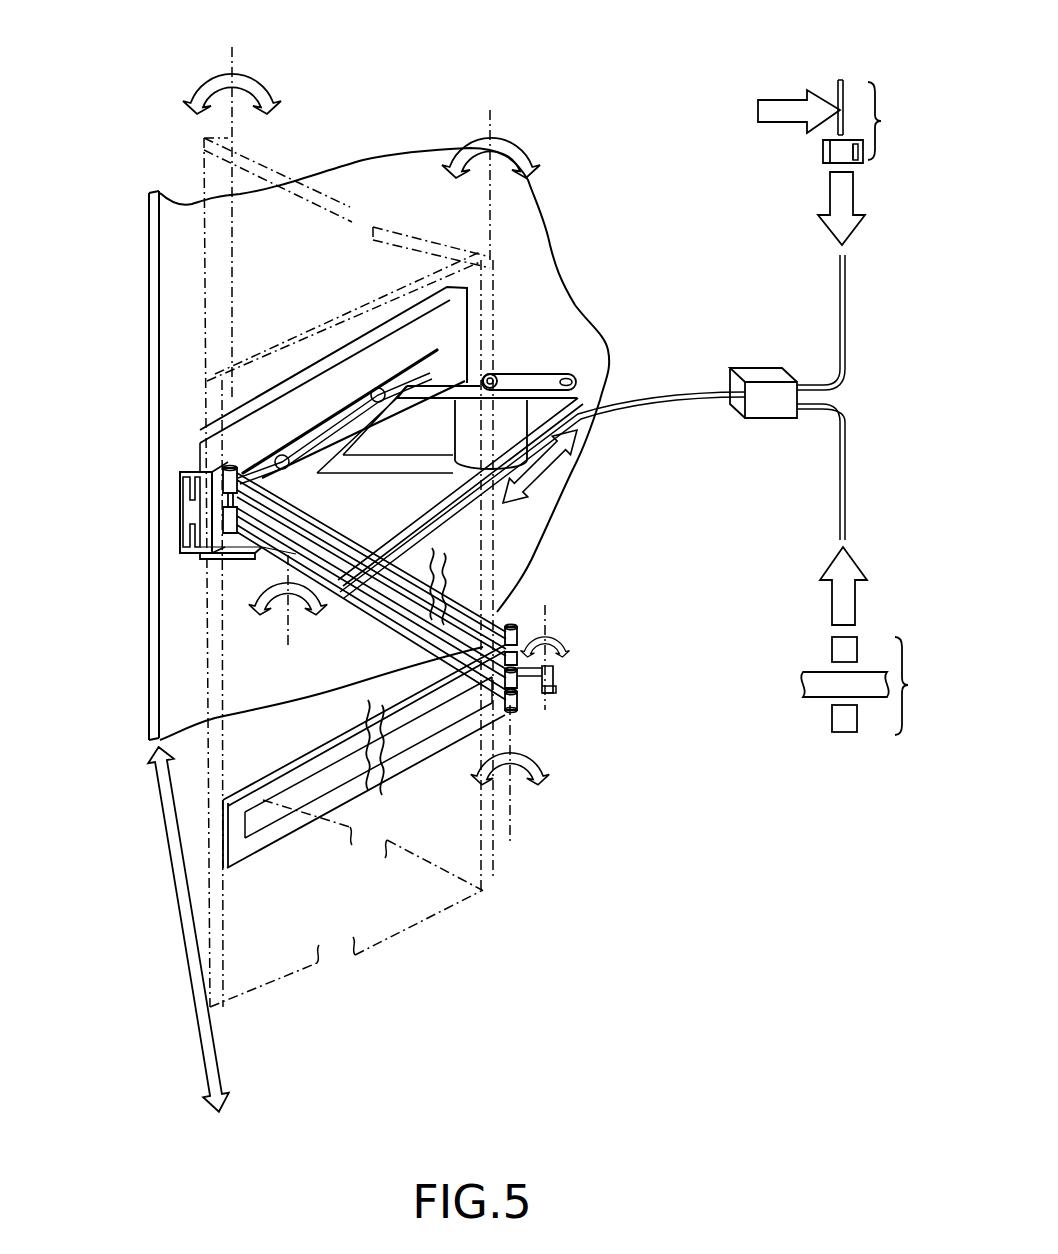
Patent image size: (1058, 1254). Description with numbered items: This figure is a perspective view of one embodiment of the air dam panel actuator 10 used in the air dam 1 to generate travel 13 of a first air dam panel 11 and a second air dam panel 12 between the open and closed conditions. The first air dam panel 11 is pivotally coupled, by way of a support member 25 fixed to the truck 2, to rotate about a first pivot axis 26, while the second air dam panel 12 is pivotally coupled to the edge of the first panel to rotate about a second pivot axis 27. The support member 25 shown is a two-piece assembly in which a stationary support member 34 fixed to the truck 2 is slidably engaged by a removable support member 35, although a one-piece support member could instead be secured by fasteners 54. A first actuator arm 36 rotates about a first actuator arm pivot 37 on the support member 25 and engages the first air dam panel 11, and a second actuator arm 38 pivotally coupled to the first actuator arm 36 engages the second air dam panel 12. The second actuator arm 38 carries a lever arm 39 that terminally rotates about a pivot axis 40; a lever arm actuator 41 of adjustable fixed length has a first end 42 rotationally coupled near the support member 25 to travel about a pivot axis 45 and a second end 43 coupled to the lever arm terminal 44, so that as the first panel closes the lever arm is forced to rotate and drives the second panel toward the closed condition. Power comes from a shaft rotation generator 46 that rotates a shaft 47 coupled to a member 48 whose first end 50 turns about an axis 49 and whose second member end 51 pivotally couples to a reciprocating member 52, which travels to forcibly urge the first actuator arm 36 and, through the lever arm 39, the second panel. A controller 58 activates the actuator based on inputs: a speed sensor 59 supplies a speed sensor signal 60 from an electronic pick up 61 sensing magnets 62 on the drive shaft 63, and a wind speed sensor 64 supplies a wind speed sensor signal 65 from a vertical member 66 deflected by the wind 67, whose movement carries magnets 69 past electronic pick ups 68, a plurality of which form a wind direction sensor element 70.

The air dam 1 is at (674, 307).
The truck 2 is at (187, 268).
The air dam panel actuator 10 is at (620, 458).
The first air dam panel 11 is at (300, 208).
The second air dam panel 12 is at (448, 908).
The travel 13 is at (190, 932).
The support member 25 is at (170, 518).
The first pivot axis 26 is at (232, 208).
The second pivot axis 27 is at (510, 778).
The stationary support member 34 is at (197, 548).
The removable support member 35 is at (243, 455).
The first actuator arm 36 is at (293, 557).
The first actuator arm pivot 37 is at (190, 550).
The second actuator arm 38 is at (370, 788).
The lever arm 39 is at (528, 702).
The pivot axis 40 is at (537, 642).
The lever arm actuator 41 is at (410, 585).
The first end 42 is at (305, 548).
The second end 43 is at (556, 690).
The lever arm terminal 44 is at (550, 673).
The pivot axis 45 is at (288, 612).
The shaft rotation generator 46 is at (465, 428).
The shaft 47 is at (495, 376).
The member 48 is at (547, 374).
The axis 49 is at (491, 173).
The first end 50 is at (481, 370).
The second member end 51 is at (585, 380).
The reciprocating member 52 is at (442, 505).
The fasteners 54 is at (375, 390).
The controller 58 is at (787, 397).
The speed sensor 59 is at (913, 686).
The speed sensor signal 60 is at (843, 586).
The electronic pick up 61 is at (844, 651).
The magnets 62 is at (844, 719).
The drive shaft 63 is at (844, 686).
The wind speed sensor 64 is at (887, 121).
The wind speed sensor signal 65 is at (841, 208).
The vertical member 66 is at (838, 84).
The wind 67 is at (799, 111).
The electronic pick ups 68 is at (823, 163).
The magnets 69 is at (826, 152).
The wind direction sensor element 70 is at (858, 165).